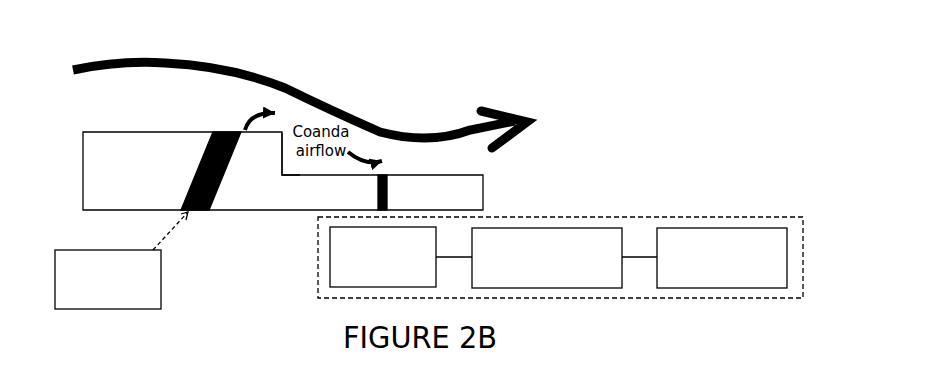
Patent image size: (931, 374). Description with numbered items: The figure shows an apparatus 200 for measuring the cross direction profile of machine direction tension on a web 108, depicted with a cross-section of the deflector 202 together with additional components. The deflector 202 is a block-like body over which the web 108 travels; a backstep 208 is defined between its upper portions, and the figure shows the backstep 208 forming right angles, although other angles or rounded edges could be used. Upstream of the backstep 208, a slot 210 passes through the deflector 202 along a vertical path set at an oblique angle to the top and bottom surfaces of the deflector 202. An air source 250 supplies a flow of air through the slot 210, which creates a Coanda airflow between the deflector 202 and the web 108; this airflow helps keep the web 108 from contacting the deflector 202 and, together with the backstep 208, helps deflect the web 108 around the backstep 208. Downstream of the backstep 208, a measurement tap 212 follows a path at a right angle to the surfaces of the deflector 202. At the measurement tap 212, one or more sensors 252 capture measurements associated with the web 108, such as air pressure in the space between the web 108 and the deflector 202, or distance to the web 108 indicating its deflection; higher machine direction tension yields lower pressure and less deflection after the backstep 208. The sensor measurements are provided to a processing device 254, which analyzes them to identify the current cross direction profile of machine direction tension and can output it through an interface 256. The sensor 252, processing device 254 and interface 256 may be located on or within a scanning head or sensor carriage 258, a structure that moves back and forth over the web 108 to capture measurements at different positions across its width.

The apparatus 200 is at (595, 91).
The web 108 is at (160, 58).
The deflector 202 is at (143, 122).
The slot 210 is at (202, 165).
The backstep 208 is at (280, 153).
The measurement tap 212 is at (377, 192).
The air source 250 is at (163, 270).
The sensor 252 is at (328, 244).
The processing device 254 is at (596, 226).
The interface 256 is at (735, 226).
The scanning head or sensor carriage 258 is at (692, 300).